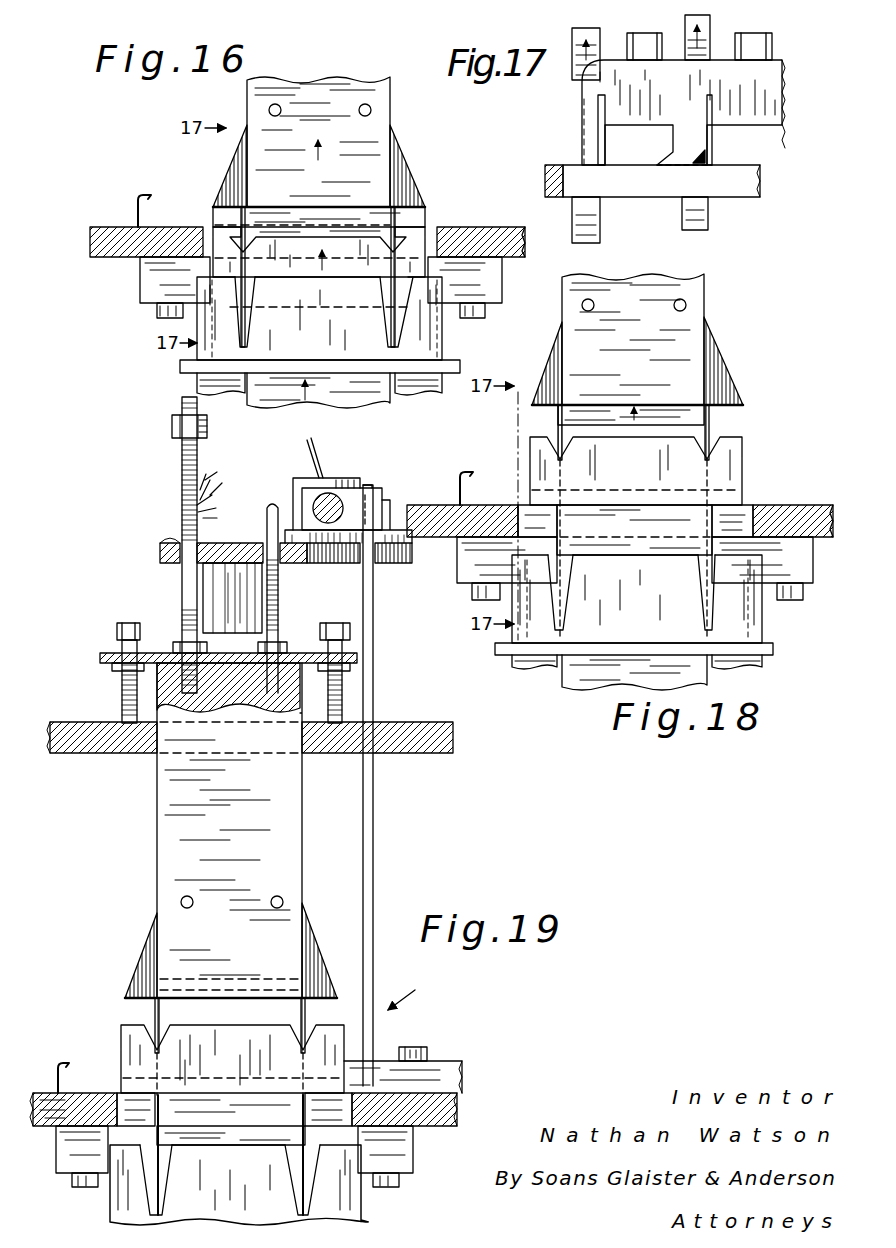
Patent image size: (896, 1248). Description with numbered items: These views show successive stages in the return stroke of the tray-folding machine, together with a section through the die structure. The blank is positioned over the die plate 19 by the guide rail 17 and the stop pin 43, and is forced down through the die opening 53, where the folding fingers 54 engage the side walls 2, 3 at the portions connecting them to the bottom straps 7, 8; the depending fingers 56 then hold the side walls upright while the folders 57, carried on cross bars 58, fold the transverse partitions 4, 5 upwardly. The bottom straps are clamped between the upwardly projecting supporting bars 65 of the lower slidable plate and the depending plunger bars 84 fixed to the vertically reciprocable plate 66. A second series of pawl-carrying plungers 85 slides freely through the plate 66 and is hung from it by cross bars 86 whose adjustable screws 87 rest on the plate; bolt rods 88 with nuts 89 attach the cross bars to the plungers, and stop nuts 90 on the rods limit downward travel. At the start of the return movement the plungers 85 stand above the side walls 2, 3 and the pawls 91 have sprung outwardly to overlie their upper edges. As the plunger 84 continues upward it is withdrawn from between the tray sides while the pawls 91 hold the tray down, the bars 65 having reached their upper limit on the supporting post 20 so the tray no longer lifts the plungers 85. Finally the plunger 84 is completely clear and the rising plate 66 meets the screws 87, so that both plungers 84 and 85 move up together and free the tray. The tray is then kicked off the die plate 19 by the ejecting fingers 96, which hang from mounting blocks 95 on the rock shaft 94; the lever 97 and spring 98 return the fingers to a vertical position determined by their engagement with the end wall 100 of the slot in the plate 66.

In FIG. 16, the side wall 2 is at (398, 217).
In FIG. 18, the side wall 2 is at (712, 425).
In FIG. 19, the side wall 2 is at (307, 1012).
In FIG. 16, the side wall 3 is at (240, 217).
In FIG. 17, the side wall 3 is at (782, 91).
In FIG. 18, the side wall 3 is at (556, 425).
In FIG. 19, the side wall 3 is at (153, 1012).
In FIG. 17, the transverse partition 4 is at (598, 110).
In FIG. 16, the transverse partition 5 is at (301, 248).
In FIG. 17, the transverse partition 5 is at (707, 113).
In FIG. 18, the transverse partition 5 is at (636, 496).
In FIG. 19, the transverse partition 5 is at (216, 1036).
In FIG. 17, the bottom strap 7 is at (592, 160).
In FIG. 17, the bottom strap 8 is at (690, 167).
In FIG. 19, the guide rail 17 is at (446, 1070).
In FIG. 16, the die plate 19 is at (90, 242).
In FIG. 17, the die plate 19 is at (545, 174).
In FIG. 18, the die plate 19 is at (813, 507).
In FIG. 19, the die plate 19 is at (72, 1093).
In FIG. 19, the supporting post 20 is at (210, 596).
In FIG. 16, the stop pin 43 is at (135, 200).
In FIG. 18, the stop pin 43 is at (458, 483).
In FIG. 19, the stop pin 43 is at (55, 1065).
In FIG. 17, the die opening 53 is at (548, 192).
In FIG. 18, the die opening 53 is at (744, 520).
In FIG. 19, the die opening 53 is at (98, 1106).
In FIG. 16, the folding finger 54 is at (213, 231).
In FIG. 18, the folding finger 54 is at (535, 518).
In FIG. 19, the folding finger 54 is at (135, 1099).
In FIG. 16, the depending finger 56 is at (197, 383).
In FIG. 18, the depending finger 56 is at (519, 663).
In FIG. 19, the depending finger 56 is at (105, 1168).
In FIG. 16, the folder 57 is at (319, 318).
In FIG. 18, the folder 57 is at (775, 625).
In FIG. 19, the folder 57 is at (239, 1185).
In FIG. 16, the cross bar 58 is at (180, 367).
In FIG. 18, the cross bar 58 is at (773, 650).
In FIG. 16, the supporting bar 65 is at (250, 320).
In FIG. 17, the supporting bar 65 is at (682, 221).
In FIG. 18, the supporting bar 65 is at (576, 676).
In FIG. 19, the supporting bar 65 is at (227, 1135).
In FIG. 19, the vertically reciprocable plate 66 is at (453, 742).
In FIG. 16, the plunger bar 84 is at (339, 207).
In FIG. 17, the plunger bar 84 is at (572, 41).
In FIG. 18, the plunger bar 84 is at (658, 412).
In FIG. 19, the plunger bar 84 is at (252, 985).
In FIG. 16, the plunger 85 is at (247, 103).
In FIG. 17, the plunger 85 is at (620, 42).
In FIG. 18, the plunger 85 is at (704, 292).
In FIG. 19, the plunger 85 is at (302, 848).
In FIG. 19, the cross bar 86 is at (100, 660).
In FIG. 19, the adjustable screw 87 is at (120, 698).
In FIG. 19, the bolt rod 88 is at (267, 516).
In FIG. 19, the nut 89 is at (210, 652).
In FIG. 19, the stop nut 90 is at (172, 428).
In FIG. 16, the pawl 91 is at (229, 174).
In FIG. 17, the pawl 91 is at (657, 42).
In FIG. 18, the pawl 91 is at (536, 366).
In FIG. 19, the pawl 91 is at (140, 958).
In FIG. 19, the rock shaft 94 is at (333, 500).
In FIG. 19, the mounting block 95 is at (379, 492).
In FIG. 19, the ejecting finger 96 is at (375, 862).
In FIG. 19, the lever 97 is at (313, 440).
In FIG. 19, the spring 98 is at (205, 470).
In FIG. 19, the end wall 100 is at (376, 760).